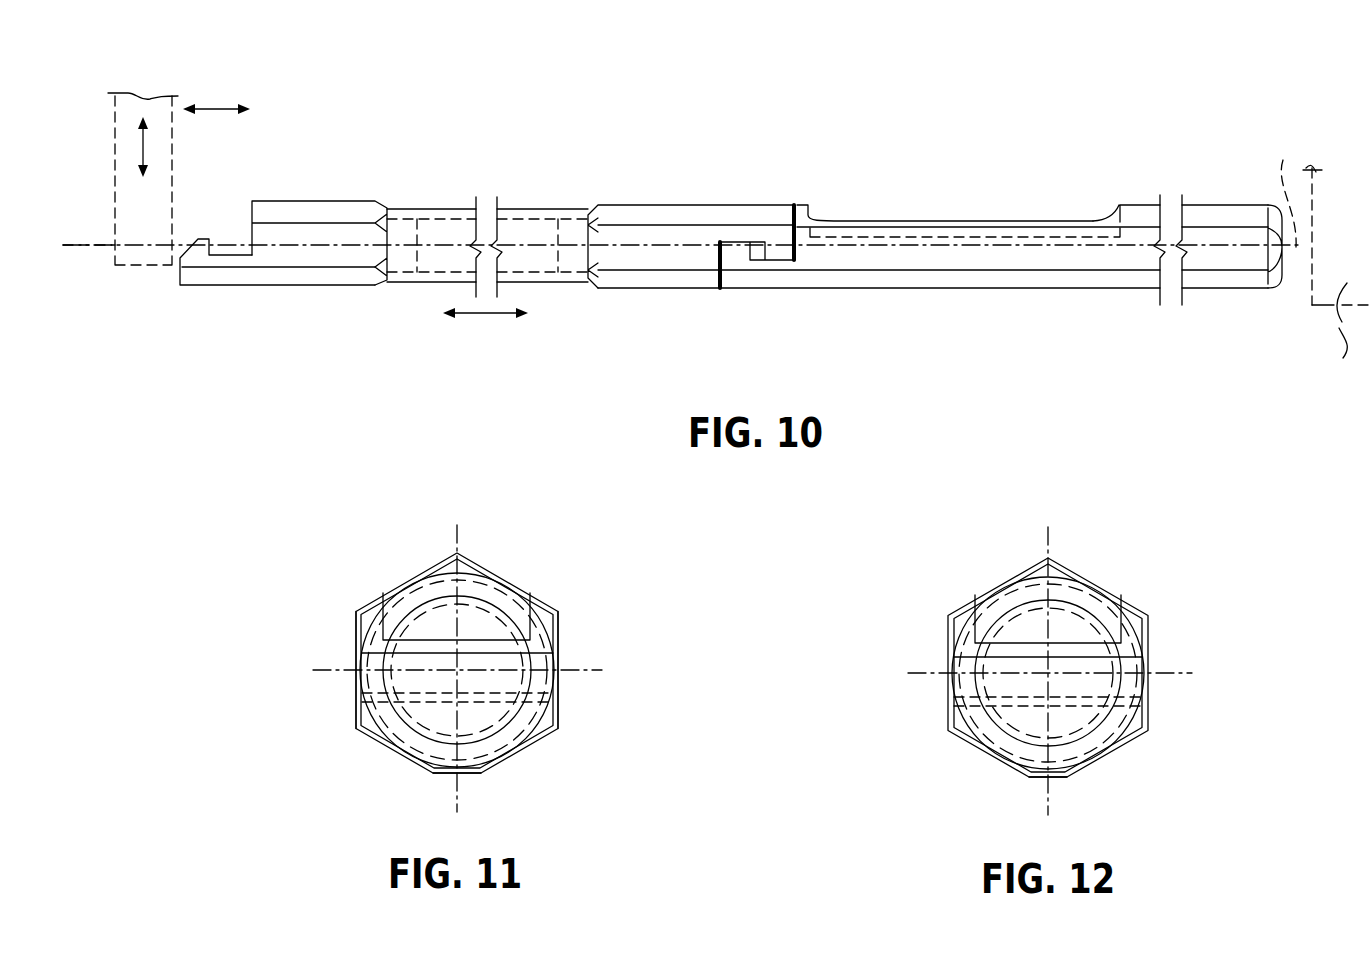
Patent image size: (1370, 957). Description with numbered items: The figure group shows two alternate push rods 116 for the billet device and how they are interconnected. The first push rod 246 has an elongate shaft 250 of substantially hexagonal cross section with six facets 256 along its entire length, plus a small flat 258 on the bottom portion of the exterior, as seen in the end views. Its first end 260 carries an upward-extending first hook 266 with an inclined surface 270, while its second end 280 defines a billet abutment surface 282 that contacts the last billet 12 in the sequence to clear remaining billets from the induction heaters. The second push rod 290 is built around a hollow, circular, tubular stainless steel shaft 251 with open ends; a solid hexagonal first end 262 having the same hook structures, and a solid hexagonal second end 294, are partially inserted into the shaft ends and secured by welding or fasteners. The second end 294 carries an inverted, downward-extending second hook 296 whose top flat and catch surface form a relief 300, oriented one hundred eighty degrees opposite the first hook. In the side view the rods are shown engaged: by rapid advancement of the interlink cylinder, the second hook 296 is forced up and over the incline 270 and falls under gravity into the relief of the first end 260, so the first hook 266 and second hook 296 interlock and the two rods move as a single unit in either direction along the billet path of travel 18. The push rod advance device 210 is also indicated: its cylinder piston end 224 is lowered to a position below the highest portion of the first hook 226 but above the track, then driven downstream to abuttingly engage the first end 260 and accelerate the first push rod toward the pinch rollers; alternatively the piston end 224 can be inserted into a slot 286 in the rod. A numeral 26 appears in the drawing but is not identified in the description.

In FIG. 10, the billet 12 is at (1336, 276).
In FIG. 10, the billet path of travel 18 is at (1283, 189).
In FIG. 10, the axis 26 is at (1315, 353).
In FIG. 10, the push rod 116 is at (645, 186).
In FIG. 10, the push rod advance device 210 is at (158, 70).
In FIG. 10, the piston end 224 is at (101, 230).
In FIG. 10, the first hook 226 is at (195, 298).
In FIG. 10, the first push rod 246 is at (1119, 196).
In FIG. 10, the shaft 250 is at (1083, 290).
In FIG. 10, the hollow shaft 251 is at (542, 207).
In FIG. 11, the facets 256 is at (374, 738).
In FIG. 11, the flat 258 is at (470, 776).
In FIG. 12, the flat 258 is at (1062, 777).
In FIG. 10, the first end 260 is at (231, 194).
In FIG. 11, the first end 262 is at (339, 636).
In FIG. 10, the first hook 266 is at (738, 262).
In FIG. 10, the inclined surface 270 is at (718, 250).
In FIG. 10, the second end 280 is at (1211, 196).
In FIG. 10, the billet abutment surface 282 is at (1282, 284).
In FIG. 12, the billet abutment surface 282 is at (1092, 602).
In FIG. 10, the slot 286 is at (929, 208).
In FIG. 10, the second push rod 290 is at (347, 180).
In FIG. 10, the second end 294 is at (788, 188).
In FIG. 10, the second hook 296 is at (760, 215).
In FIG. 10, the relief 300 is at (724, 257).